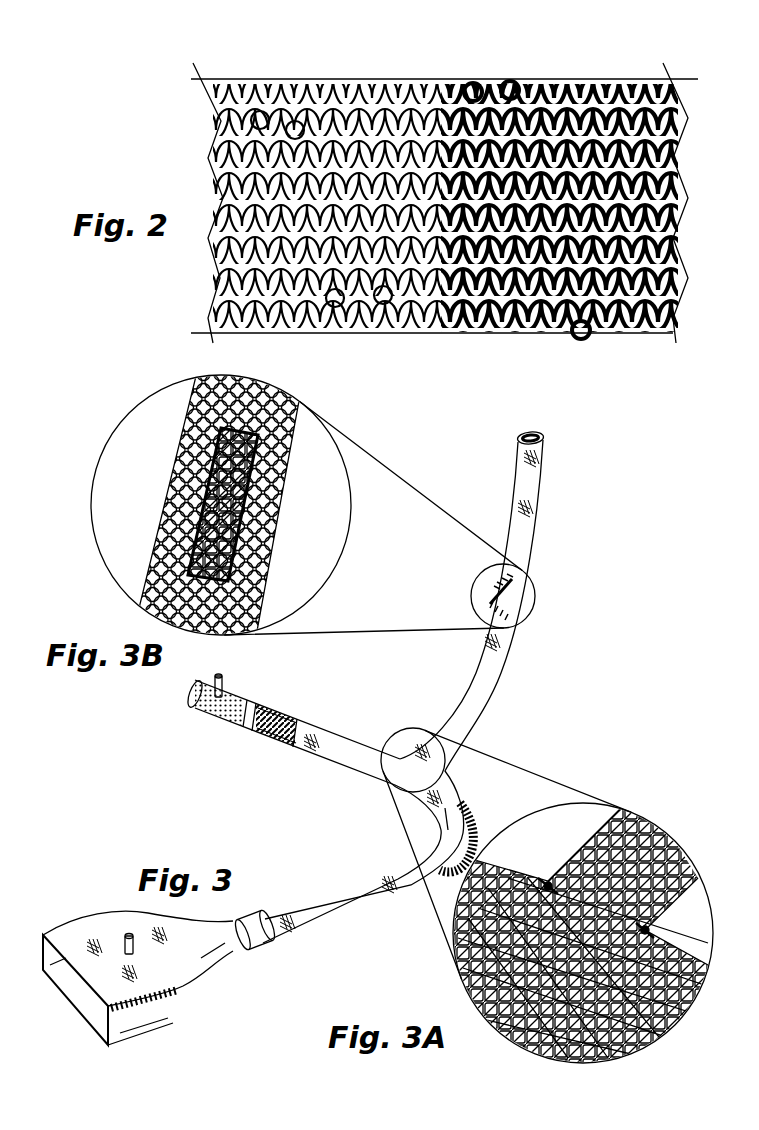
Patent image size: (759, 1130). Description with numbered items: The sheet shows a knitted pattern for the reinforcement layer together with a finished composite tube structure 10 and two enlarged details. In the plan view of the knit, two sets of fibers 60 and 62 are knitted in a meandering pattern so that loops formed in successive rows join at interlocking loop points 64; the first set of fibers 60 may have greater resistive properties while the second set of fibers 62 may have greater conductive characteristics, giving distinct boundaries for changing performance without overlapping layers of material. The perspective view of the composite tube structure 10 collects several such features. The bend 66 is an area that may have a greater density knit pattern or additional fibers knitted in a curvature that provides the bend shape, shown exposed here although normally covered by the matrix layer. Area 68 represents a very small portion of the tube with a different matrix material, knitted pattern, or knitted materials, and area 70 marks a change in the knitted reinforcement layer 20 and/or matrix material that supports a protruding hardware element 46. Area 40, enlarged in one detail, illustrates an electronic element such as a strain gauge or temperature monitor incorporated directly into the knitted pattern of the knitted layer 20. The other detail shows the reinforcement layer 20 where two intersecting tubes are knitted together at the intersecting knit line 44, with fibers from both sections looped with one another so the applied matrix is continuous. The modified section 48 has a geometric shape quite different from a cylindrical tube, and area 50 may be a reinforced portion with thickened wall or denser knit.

In FIG. 3, the composite tube structure 10 is at (525, 482).
In FIG. 2, the knitted reinforcement layer 20 is at (435, 333).
In FIG. 3B, the knitted reinforcement layer 20 is at (135, 506).
In FIG. 3A, the knitted reinforcement layer 20 is at (643, 820).
In FIG. 3B, the electronic element area 40 is at (176, 445).
In FIG. 3, the electronic element area 40 is at (510, 593).
In FIG. 3A, the intersecting knit line 44 is at (540, 873).
In FIG. 3, the protruding hardware element 46 is at (215, 668).
In FIG. 3, the modified section 48 is at (66, 925).
In FIG. 3, the reinforced portion 50 is at (232, 908).
In FIG. 2, the first set of fibers 60 is at (347, 67).
In FIG. 2, the second set of fibers 62 is at (577, 65).
In FIG. 2, the interlocking loop points 64 is at (287, 120).
In FIG. 3, the bend 66 is at (463, 820).
In FIG. 3, the modified area 68 is at (270, 702).
In FIG. 3, the hardware support area 70 is at (213, 703).